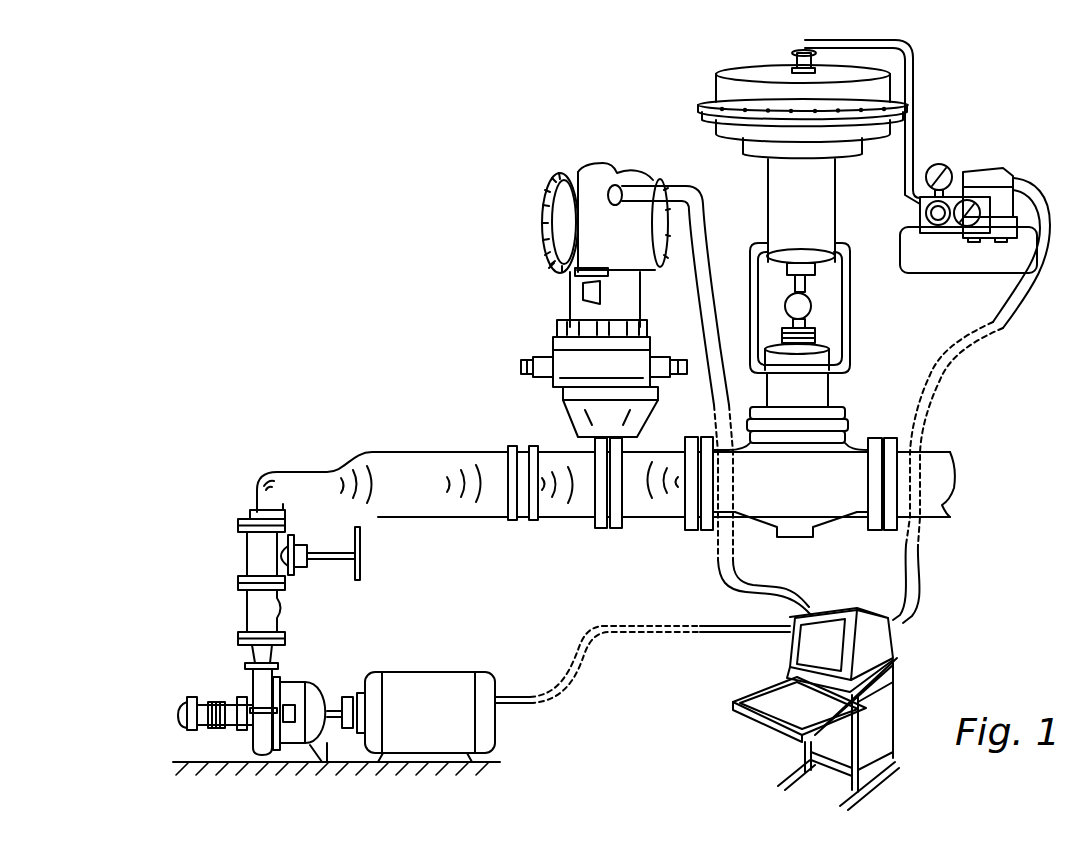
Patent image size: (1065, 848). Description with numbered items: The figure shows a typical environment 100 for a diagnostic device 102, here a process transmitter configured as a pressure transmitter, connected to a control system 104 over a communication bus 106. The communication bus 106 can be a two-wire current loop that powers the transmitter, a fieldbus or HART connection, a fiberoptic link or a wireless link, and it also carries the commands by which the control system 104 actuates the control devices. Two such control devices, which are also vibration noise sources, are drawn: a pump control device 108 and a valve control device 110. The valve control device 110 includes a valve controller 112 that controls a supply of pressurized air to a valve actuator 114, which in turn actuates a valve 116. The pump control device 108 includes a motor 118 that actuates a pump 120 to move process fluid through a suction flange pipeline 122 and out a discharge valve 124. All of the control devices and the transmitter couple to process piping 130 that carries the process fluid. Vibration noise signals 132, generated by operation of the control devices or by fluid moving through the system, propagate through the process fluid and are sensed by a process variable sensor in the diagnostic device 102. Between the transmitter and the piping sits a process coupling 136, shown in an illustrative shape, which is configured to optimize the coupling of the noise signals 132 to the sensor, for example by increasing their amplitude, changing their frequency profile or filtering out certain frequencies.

The typical environment 100 is at (352, 276).
The diagnostic device 102 is at (545, 266).
The control system 104 is at (905, 644).
The communication bus 106 is at (688, 180).
The pump control device 108 is at (222, 681).
The valve control device 110 is at (1024, 108).
The valve controller 112 is at (966, 170).
The valve actuator 114 is at (822, 214).
The valve 116 is at (808, 470).
The motor 118 is at (412, 687).
The pump 120 is at (313, 696).
The suction flange pipeline 122 is at (228, 721).
The discharge valve 124 is at (262, 578).
The process piping 130 is at (323, 471).
The vibration noise signals 132 is at (282, 489).
The process coupling 136 is at (570, 432).